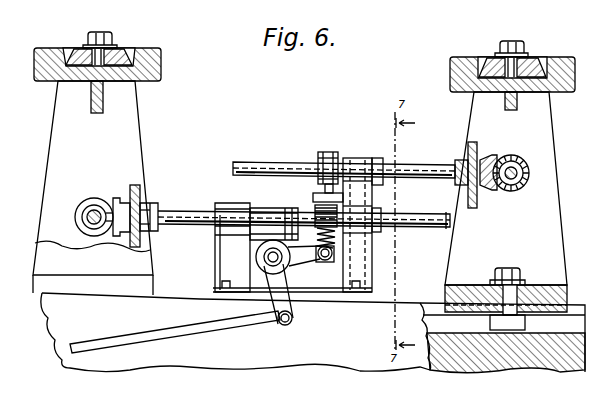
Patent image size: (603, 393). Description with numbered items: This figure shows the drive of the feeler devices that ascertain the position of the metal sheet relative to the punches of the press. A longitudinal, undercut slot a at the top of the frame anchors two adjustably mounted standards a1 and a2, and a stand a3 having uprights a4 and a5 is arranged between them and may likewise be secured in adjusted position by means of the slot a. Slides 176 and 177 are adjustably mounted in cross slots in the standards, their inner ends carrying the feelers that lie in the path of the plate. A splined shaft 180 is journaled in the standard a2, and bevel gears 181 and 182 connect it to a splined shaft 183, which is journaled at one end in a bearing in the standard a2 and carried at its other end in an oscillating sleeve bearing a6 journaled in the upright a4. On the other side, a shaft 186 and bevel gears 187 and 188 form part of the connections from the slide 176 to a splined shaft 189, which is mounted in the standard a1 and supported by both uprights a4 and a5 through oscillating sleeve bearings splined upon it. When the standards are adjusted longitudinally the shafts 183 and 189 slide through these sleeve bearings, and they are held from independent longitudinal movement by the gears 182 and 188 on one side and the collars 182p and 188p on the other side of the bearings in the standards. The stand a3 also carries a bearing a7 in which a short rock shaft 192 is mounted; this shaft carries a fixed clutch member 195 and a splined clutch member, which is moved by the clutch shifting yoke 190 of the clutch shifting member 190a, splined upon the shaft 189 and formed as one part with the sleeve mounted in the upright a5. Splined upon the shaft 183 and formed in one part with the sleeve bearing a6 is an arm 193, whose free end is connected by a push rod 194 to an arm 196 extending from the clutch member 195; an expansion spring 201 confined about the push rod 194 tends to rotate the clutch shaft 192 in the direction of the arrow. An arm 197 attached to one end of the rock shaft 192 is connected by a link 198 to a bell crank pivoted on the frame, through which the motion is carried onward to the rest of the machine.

The slide 176 is at (116, 48).
The slide 177 is at (530, 54).
The splined shaft 180 is at (504, 186).
The bevel gear 181 is at (526, 185).
The bevel gear 182 is at (490, 158).
The collar 182p is at (458, 160).
The splined shaft 183 is at (250, 162).
The shaft 186 is at (86, 218).
The bevel gear 187 is at (100, 203).
The bevel gear 188 is at (133, 186).
The collar 188p is at (144, 201).
The splined shaft 189 is at (178, 211).
The clutch shifting yoke 190 is at (268, 232).
The clutch shifting member 190a is at (258, 208).
The rock shaft 192 is at (262, 262).
The arm 193 is at (326, 152).
The push rod 194 is at (320, 205).
The fixed clutch member 195 is at (265, 255).
The arm 196 is at (310, 258).
The arm 197 is at (293, 312).
The link 198 is at (222, 339).
The spring 201 is at (330, 240).
The undercut slot a is at (453, 327).
The standard a1 is at (140, 146).
The standard a2 is at (548, 158).
The stand a3 is at (362, 302).
The upright a4 is at (372, 196).
The upright a5 is at (216, 250).
The oscillating sleeve bearing a6 is at (382, 160).
The bearing a7 is at (242, 292).